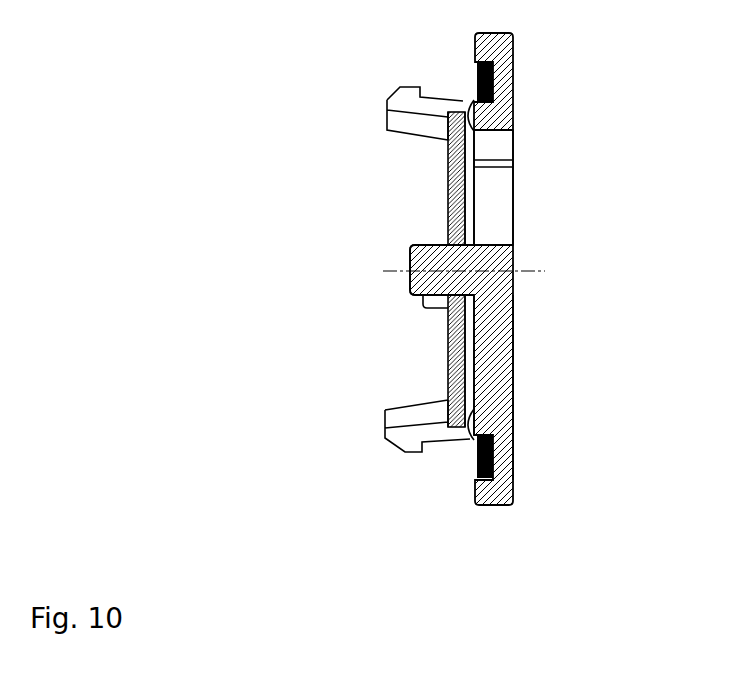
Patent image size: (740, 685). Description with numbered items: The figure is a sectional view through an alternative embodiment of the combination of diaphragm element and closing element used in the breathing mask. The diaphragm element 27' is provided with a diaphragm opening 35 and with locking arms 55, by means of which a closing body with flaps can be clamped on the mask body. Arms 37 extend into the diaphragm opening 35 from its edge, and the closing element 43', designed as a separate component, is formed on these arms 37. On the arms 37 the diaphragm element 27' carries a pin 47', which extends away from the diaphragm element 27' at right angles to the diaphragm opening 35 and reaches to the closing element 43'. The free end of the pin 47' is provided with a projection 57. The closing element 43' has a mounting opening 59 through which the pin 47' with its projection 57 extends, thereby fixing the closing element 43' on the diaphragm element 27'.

The diaphragm element 27' is at (545, 269).
The diaphragm opening 35 is at (492, 188).
The arms 37 is at (498, 327).
The closing element 43' is at (347, 269).
The pin 47' is at (322, 275).
The locking arms 55 is at (408, 97).
The projection 57 is at (432, 307).
The mounting opening 59 is at (474, 243).